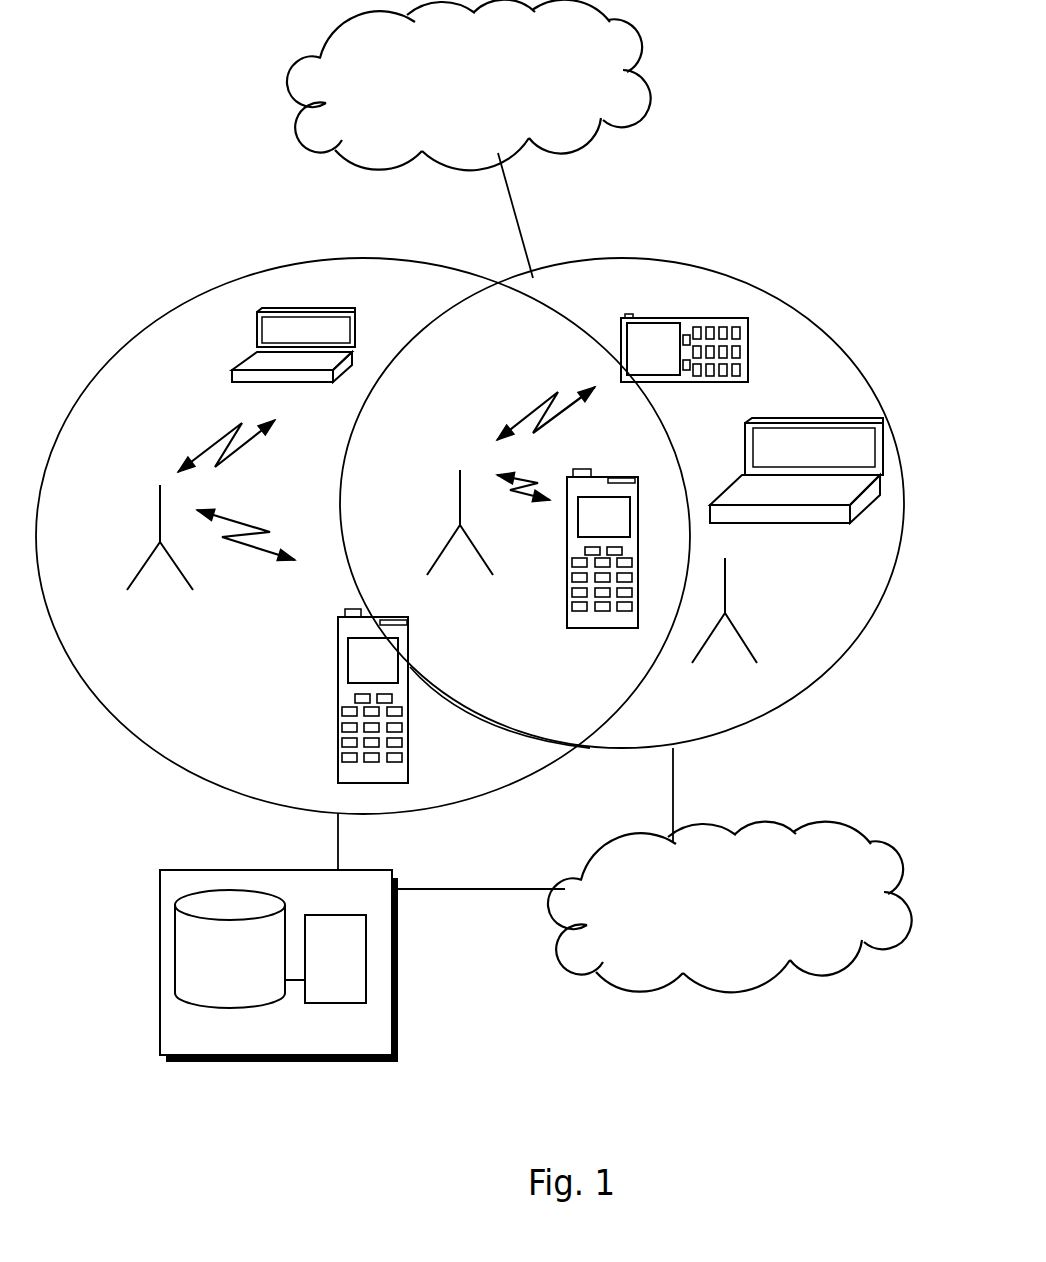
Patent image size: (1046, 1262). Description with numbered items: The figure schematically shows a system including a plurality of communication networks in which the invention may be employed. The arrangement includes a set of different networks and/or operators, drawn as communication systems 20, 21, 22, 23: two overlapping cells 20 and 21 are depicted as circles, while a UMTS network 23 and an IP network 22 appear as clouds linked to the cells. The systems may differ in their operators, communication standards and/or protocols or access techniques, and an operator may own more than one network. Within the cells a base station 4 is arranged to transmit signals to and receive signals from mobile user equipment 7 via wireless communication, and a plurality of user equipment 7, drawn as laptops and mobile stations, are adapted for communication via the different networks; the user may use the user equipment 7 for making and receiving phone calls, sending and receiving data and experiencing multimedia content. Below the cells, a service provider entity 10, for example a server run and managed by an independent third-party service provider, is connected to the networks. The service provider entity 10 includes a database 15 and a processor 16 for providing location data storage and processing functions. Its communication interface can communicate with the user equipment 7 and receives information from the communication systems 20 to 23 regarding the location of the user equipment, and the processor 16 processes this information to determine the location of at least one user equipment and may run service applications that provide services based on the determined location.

The communication system 23 is at (409, 72).
The communication system 22 is at (676, 948).
The communication system 21 is at (173, 700).
The communication system 20 is at (841, 634).
The user equipment 7 is at (302, 325).
The base station 4 is at (757, 663).
The service provider entity 10 is at (315, 982).
The processor 16 is at (358, 945).
The database 15 is at (245, 985).